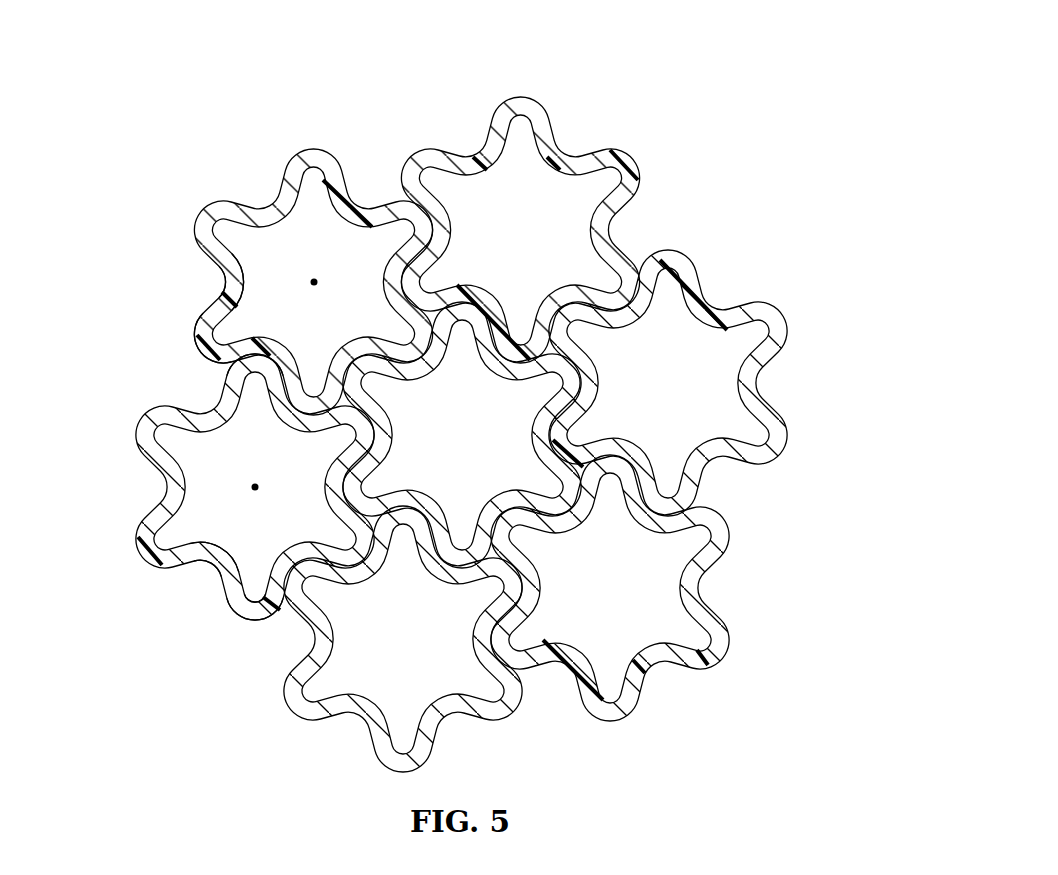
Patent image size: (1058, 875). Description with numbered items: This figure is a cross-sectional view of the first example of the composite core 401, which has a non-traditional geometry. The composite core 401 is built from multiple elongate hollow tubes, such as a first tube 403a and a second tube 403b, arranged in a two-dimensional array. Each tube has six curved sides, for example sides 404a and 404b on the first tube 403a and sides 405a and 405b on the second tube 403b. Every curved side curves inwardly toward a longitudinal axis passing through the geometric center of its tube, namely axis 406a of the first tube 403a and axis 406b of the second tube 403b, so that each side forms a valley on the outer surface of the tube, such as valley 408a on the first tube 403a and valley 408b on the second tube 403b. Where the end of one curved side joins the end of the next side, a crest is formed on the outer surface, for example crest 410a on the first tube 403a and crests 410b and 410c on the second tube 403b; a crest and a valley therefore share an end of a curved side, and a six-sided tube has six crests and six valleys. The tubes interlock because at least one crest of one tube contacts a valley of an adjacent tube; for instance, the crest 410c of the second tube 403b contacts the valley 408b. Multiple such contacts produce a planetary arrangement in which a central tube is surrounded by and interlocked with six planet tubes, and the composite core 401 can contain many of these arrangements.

The composite core 401 is at (644, 121).
The first tube 403a is at (200, 217).
The second tube 403b is at (141, 554).
The side 404a is at (218, 307).
The side 404b is at (243, 368).
The side 405a is at (230, 578).
The side 405b is at (260, 578).
The axis 406a is at (315, 278).
The axis 406b is at (255, 483).
The valley 408a is at (225, 273).
The valley 408b is at (207, 563).
The crest 410a is at (200, 357).
The crest 410b is at (260, 617).
The crest 410c is at (262, 350).